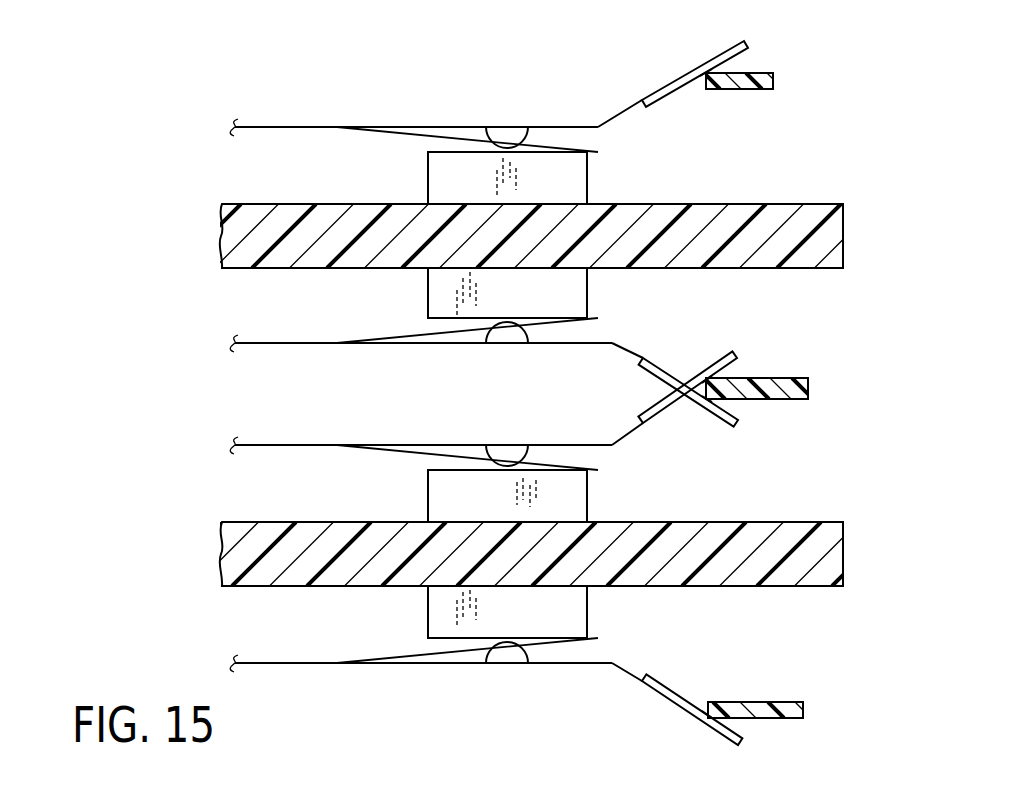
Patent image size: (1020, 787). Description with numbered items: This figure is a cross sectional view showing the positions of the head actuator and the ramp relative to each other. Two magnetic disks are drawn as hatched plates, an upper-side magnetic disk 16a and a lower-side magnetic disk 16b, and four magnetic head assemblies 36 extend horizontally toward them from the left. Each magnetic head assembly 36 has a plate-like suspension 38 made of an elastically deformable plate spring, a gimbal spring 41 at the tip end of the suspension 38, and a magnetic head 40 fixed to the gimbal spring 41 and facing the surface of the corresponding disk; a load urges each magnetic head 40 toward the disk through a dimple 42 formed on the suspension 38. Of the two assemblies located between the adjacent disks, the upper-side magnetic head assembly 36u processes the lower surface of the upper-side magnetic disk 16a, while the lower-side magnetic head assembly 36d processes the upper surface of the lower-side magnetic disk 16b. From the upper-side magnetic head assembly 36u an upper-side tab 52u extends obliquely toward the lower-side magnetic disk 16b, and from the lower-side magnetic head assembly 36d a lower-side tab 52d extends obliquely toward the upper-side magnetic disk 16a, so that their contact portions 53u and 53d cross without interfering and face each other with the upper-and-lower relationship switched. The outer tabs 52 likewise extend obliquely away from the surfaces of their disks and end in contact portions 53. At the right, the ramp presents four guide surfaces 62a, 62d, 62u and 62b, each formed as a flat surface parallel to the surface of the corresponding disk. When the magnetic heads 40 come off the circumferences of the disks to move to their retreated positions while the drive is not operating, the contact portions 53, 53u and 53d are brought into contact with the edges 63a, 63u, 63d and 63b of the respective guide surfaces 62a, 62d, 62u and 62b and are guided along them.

The upper-side magnetic disk 16a is at (792, 203).
The lower-side magnetic disk 16b is at (770, 585).
The magnetic head assembly 36 is at (364, 115).
The upper-side magnetic head assembly 36u is at (268, 359).
The lower-side magnetic head assembly 36d is at (336, 432).
The suspension 38 is at (277, 125).
The magnetic head 40 is at (587, 177).
The gimbal spring 41 is at (402, 134).
The dimple 42 is at (508, 127).
The tab 52 is at (612, 118).
The upper-side tab 52u is at (620, 347).
The lower-side tab 52d is at (614, 441).
The contact portion 53 is at (665, 98).
The upper-side contact portion 53u is at (655, 362).
The lower-side contact portion 53d is at (655, 416).
The guide surface 62a is at (730, 89).
The guide surface 62b is at (780, 718).
The guide surface 62u is at (789, 400).
The guide surface 62d is at (810, 378).
The edge of guide surface 63a is at (705, 62).
The edge of guide surface 63b is at (702, 719).
The edge of guide surface 63u is at (705, 408).
The edge of guide surface 63d is at (733, 369).